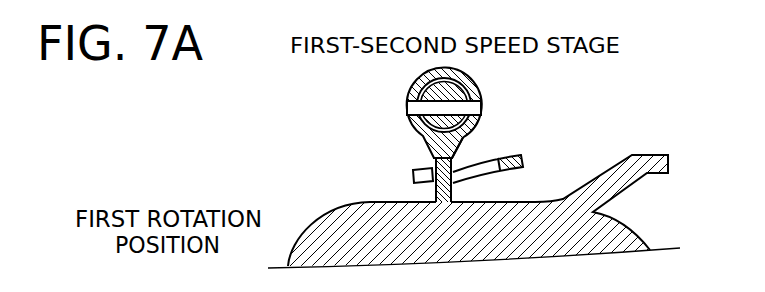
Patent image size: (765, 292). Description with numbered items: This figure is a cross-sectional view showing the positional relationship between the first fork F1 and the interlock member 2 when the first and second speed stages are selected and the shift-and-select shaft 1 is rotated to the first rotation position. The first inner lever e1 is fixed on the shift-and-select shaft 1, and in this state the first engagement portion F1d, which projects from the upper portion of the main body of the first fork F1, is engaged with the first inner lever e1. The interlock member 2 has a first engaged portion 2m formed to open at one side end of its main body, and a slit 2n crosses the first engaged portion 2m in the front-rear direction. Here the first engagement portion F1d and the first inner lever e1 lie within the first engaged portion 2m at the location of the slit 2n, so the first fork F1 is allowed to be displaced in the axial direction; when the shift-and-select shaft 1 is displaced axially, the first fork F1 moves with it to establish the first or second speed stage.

The shift-and-select shaft 1 is at (428, 72).
The first inner lever e1 is at (480, 96).
The interlock member 2 is at (517, 173).
The first engaged portion 2m is at (521, 156).
The slit 2n is at (432, 167).
The first fork F1 is at (350, 195).
The first engagement portion F1d is at (462, 158).